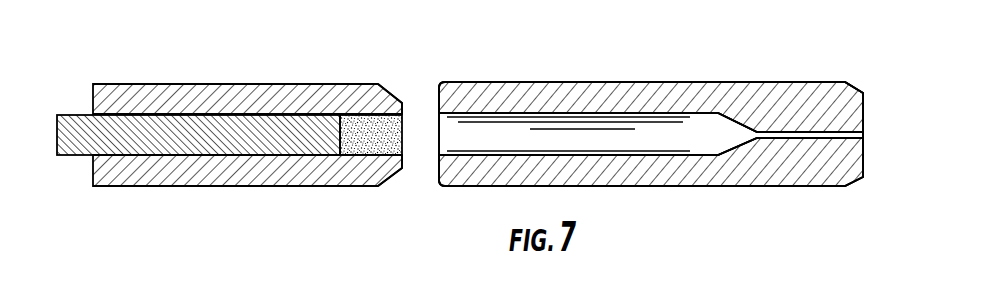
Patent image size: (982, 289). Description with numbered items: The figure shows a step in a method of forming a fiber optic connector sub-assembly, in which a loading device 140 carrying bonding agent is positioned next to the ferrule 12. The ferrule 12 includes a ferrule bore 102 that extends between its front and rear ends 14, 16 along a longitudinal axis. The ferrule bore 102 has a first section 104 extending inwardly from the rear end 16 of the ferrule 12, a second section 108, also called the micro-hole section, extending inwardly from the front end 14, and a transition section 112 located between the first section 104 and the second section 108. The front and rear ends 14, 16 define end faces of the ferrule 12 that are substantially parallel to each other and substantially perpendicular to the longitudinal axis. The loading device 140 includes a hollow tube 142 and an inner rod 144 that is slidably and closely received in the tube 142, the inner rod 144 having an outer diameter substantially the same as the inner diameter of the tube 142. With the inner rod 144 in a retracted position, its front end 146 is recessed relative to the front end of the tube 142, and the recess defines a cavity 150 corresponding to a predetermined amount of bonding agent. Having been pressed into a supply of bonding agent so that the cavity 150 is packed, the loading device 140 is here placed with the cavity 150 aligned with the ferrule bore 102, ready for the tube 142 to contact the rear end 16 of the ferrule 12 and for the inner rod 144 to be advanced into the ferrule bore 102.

The ferrule 12 is at (649, 118).
The front end 14 is at (865, 107).
The rear end 16 is at (440, 94).
The ferrule bore 102 is at (640, 129).
The first section 104 is at (598, 113).
The second section 108 is at (803, 130).
The transition section 112 is at (740, 120).
The loading device 140 is at (257, 100).
The tube 142 is at (262, 100).
The inner rod 144 is at (57, 132).
The front end of the inner rod 146 is at (402, 102).
The cavity 150 is at (363, 124).